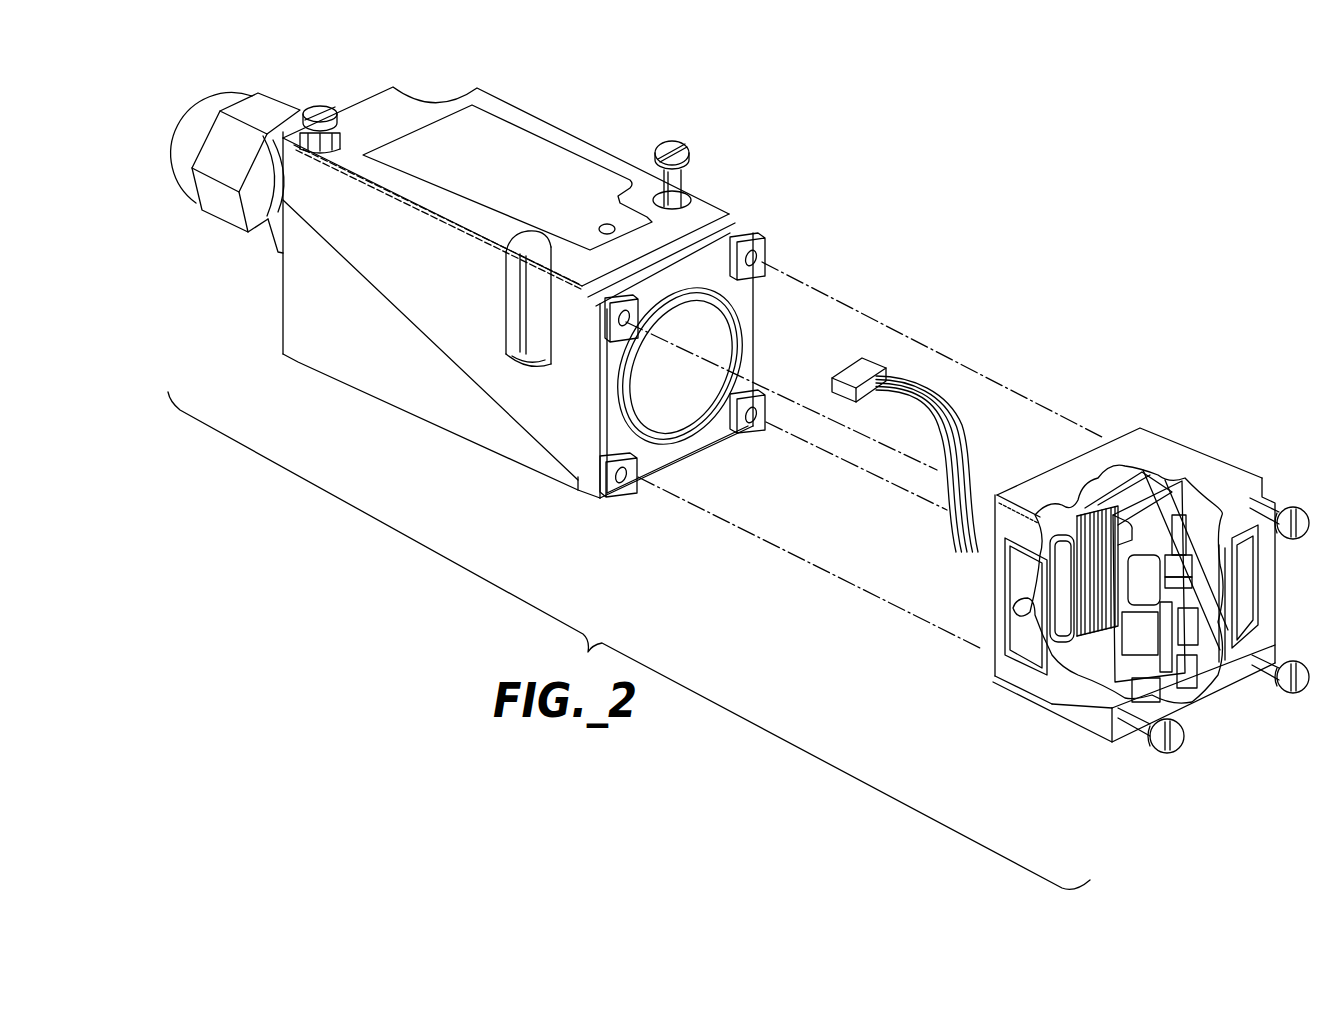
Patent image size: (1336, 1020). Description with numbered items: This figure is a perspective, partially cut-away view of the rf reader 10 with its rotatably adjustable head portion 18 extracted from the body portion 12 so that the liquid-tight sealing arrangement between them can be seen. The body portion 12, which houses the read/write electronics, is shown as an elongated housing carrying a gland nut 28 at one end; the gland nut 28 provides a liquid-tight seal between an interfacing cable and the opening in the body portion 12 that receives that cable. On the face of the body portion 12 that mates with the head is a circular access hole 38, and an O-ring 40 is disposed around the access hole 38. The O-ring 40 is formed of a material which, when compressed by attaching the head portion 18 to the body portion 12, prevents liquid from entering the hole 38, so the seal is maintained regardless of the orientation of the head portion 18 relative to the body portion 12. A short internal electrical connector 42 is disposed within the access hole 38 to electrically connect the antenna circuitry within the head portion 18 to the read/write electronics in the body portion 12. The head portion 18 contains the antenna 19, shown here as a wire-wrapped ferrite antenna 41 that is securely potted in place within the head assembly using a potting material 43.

The rf reader 10 is at (992, 233).
The body portion 12 is at (550, 281).
The head portion 18 is at (1110, 543).
The antenna 19 is at (1098, 508).
The gland nut 28 is at (225, 222).
The circular access hole 38 is at (706, 366).
The O-ring 40 is at (682, 447).
The wire-wrapped ferrite antenna 41 is at (1056, 627).
The internal electrical connector 42 is at (953, 534).
The potting material 43 is at (1120, 529).